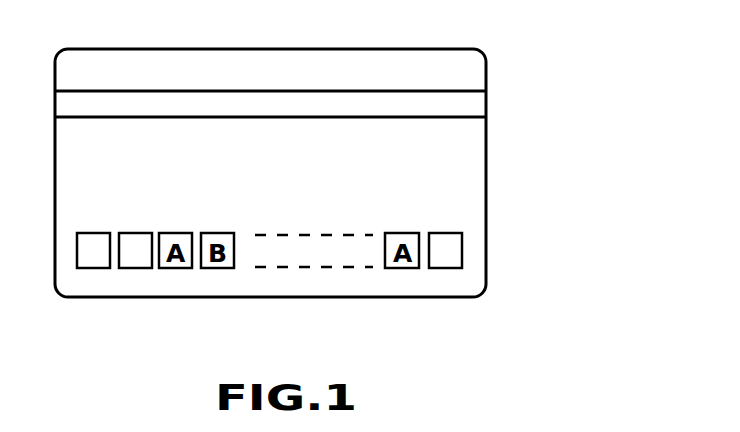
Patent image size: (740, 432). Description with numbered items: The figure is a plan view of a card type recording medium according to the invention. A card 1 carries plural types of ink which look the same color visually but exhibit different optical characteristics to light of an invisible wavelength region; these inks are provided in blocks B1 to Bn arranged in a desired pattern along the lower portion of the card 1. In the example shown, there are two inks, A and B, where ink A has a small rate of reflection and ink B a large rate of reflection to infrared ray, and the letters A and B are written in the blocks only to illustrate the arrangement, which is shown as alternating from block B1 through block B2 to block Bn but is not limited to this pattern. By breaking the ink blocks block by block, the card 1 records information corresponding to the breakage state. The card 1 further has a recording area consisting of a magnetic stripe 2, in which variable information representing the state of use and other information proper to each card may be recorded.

The card 1 is at (295, 33).
The magnetic stripe 2 is at (473, 103).
The block B1 is at (93, 268).
The block B2 is at (138, 268).
The block Bn is at (443, 268).